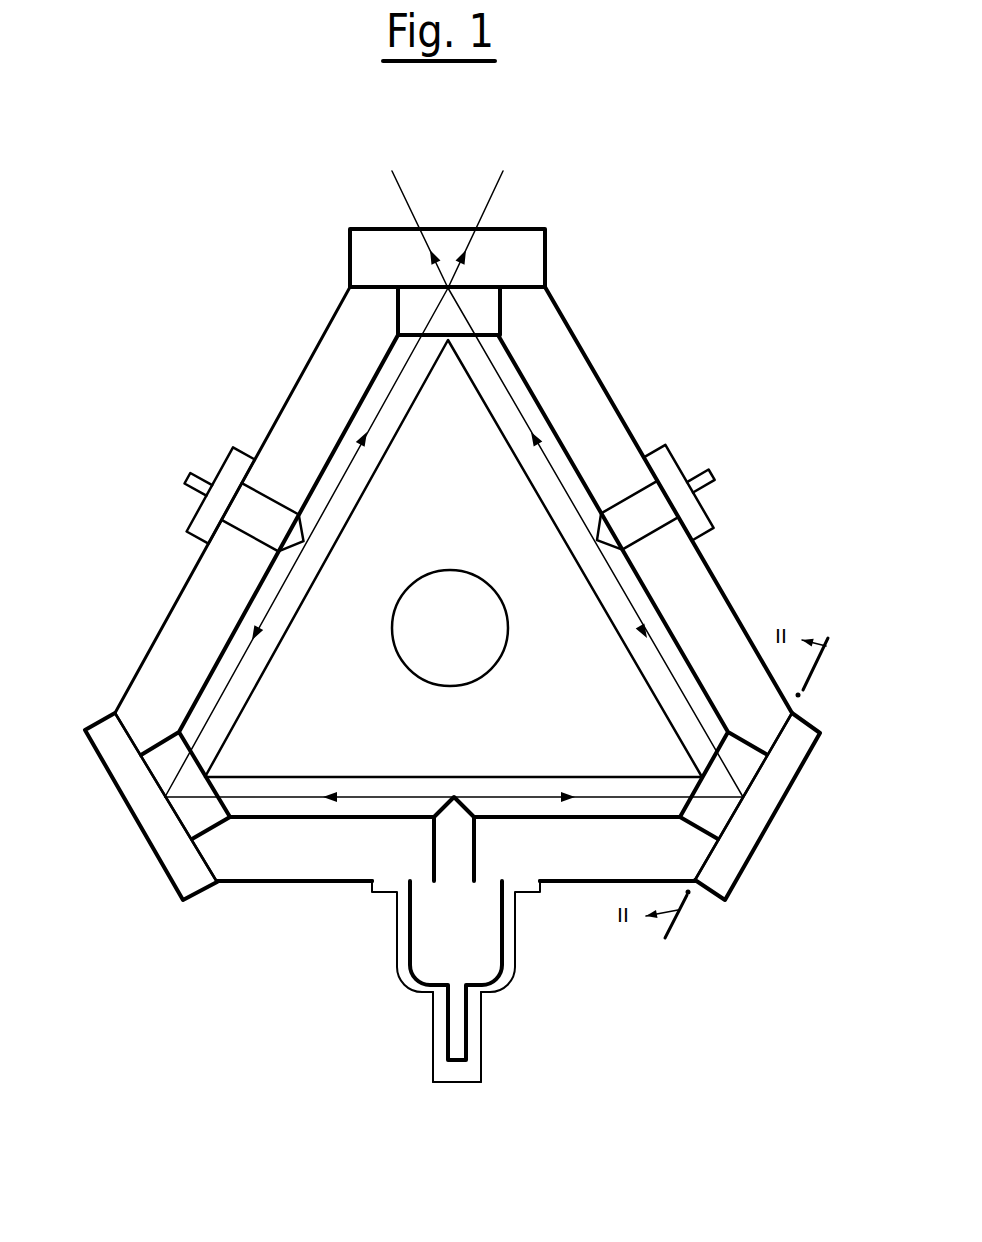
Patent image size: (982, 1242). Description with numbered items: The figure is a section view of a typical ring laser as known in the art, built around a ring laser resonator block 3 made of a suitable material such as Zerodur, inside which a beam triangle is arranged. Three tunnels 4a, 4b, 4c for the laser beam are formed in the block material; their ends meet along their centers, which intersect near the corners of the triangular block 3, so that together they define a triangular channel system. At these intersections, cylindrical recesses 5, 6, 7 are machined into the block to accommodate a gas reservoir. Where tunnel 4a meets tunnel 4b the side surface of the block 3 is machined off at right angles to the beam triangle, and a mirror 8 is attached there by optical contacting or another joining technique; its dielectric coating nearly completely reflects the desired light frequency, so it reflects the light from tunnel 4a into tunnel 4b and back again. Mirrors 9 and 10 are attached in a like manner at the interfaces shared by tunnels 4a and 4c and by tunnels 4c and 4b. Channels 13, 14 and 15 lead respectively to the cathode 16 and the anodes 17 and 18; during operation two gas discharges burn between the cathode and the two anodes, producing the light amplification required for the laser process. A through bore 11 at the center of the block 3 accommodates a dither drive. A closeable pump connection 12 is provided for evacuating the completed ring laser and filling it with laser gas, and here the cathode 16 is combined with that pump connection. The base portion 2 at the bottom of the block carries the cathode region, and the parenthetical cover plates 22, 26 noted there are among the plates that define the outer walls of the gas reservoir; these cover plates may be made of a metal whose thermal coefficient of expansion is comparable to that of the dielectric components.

The laser block 2 is at (556, 858).
The ring laser resonator block 3 is at (613, 372).
The tunnel 4a is at (664, 642).
The tunnel 4b is at (293, 807).
The tunnel 4c is at (236, 648).
The cylindrical recess 5 is at (743, 765).
The cylindrical recess 6 is at (215, 888).
The cylindrical recess 7 is at (483, 313).
The mirror 8 is at (735, 850).
The mirror 9 is at (534, 250).
The mirror 10 is at (170, 828).
The through bore 11 is at (436, 646).
The pump connection 12 is at (460, 1037).
The channel 13 is at (437, 853).
The channel 14 is at (652, 518).
The channel 15 is at (263, 519).
The cathode 16 is at (412, 986).
The anode 17 is at (694, 518).
The anode 18 is at (237, 452).
The cover plate 22 is at (427, 933).
The cover plate 26 is at (611, 933).